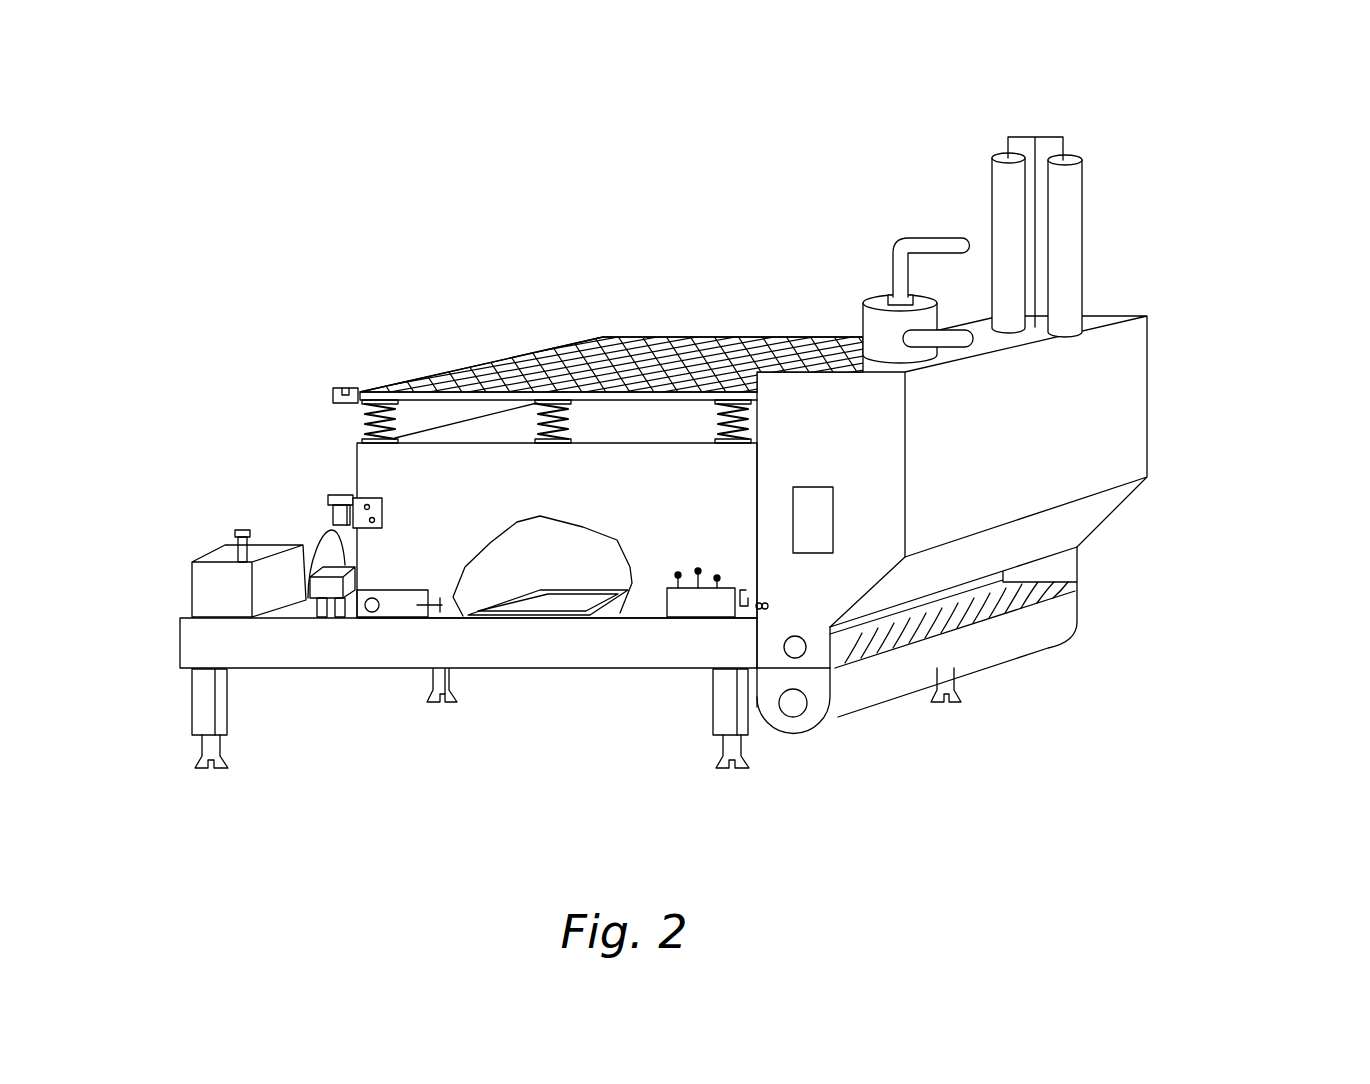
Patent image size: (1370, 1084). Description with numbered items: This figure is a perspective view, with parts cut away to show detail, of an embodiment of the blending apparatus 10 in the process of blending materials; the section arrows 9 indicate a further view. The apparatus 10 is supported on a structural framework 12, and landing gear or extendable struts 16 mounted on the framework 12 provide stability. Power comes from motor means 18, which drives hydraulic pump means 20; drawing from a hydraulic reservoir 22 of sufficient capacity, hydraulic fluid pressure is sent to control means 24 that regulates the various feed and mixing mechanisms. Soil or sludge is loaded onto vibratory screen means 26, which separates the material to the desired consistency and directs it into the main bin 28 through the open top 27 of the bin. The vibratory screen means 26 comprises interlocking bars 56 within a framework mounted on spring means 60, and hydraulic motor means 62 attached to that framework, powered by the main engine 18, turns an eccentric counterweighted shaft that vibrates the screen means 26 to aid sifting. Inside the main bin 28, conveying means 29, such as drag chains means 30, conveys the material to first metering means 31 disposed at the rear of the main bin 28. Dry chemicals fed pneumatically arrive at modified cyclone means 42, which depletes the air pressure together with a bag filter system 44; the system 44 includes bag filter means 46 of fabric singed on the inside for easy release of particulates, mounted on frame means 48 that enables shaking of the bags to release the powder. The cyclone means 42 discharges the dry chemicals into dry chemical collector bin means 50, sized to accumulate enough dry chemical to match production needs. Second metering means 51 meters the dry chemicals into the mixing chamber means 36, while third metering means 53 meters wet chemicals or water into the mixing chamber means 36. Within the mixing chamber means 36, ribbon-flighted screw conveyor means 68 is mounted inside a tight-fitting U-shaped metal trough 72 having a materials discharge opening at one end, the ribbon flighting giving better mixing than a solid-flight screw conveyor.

The section line of FIG. 9 is at (1369, 69).
The apparatus 10 is at (366, 290).
The structural framework 12 is at (372, 650).
The landing gear or extendable struts 16 is at (203, 773).
The motor means 18 is at (351, 515).
The hydraulic pump means 20 is at (345, 565).
The hydraulic reservoir 22 is at (232, 555).
The control means 24 is at (708, 570).
The vibratory screen means 26 is at (535, 352).
The open top 27 is at (503, 437).
The main bin 28 is at (562, 490).
The conveying means 29 is at (520, 627).
The drag chains means 30 is at (550, 620).
The first metering means 31 is at (760, 553).
The mixing chamber means 36 is at (840, 720).
The modified cyclone means 42 is at (868, 327).
The bag filter system 44 is at (1005, 205).
The bag filter means 46 is at (998, 232).
The frame means 48 is at (1035, 132).
The dry chemical collector bin means 50 is at (1061, 390).
The second metering means 51 is at (798, 636).
The third metering means 53 is at (758, 627).
The interlocking bars 56 is at (760, 350).
The spring means 60 is at (360, 428).
The hydraulic motor means 62 is at (345, 388).
The ribbon-flighted screw conveyor means 68 is at (970, 587).
The U-shaped metal trough 72 is at (963, 653).